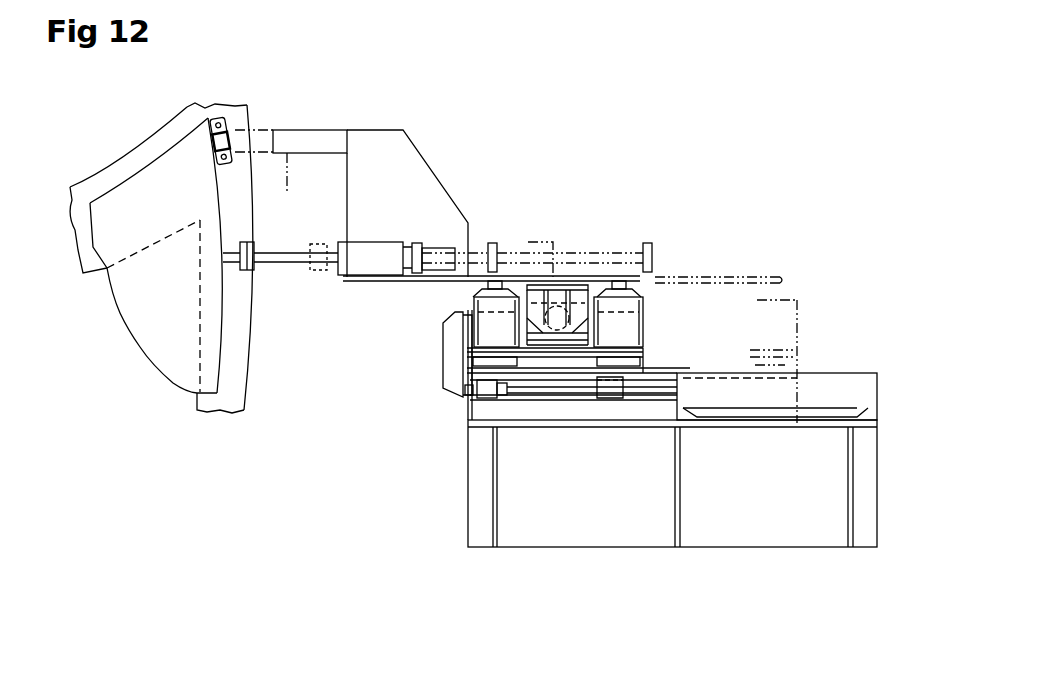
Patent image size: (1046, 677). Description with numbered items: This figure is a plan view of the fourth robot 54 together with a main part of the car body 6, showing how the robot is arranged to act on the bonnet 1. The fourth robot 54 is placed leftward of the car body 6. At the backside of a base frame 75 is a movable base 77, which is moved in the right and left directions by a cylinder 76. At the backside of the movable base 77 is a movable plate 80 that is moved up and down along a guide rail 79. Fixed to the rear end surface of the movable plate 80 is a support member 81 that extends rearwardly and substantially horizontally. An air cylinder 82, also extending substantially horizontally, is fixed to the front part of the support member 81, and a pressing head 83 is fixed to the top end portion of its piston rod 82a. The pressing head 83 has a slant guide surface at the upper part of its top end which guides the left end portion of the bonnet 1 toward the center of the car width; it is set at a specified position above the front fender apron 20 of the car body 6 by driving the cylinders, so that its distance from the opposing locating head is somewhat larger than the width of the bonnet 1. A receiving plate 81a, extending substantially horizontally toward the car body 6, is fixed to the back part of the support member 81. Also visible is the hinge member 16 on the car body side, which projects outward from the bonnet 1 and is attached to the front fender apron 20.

The bonnet 1 is at (140, 177).
The car body 6 is at (245, 417).
The hinge member on the car body side 16 is at (230, 134).
The front fender apron 20 is at (238, 357).
The fourth robot 54 is at (775, 213).
The base frame 75 is at (767, 535).
The cylinder 76 is at (838, 373).
The movable base 77 is at (627, 343).
The guide rail 79 is at (627, 277).
The movable plate 80 is at (517, 277).
The support member 81 is at (429, 163).
The receiving plate 81a is at (314, 130).
The air cylinder 82 is at (377, 242).
The piston rod 82a is at (283, 266).
The pressing head 83 is at (233, 268).